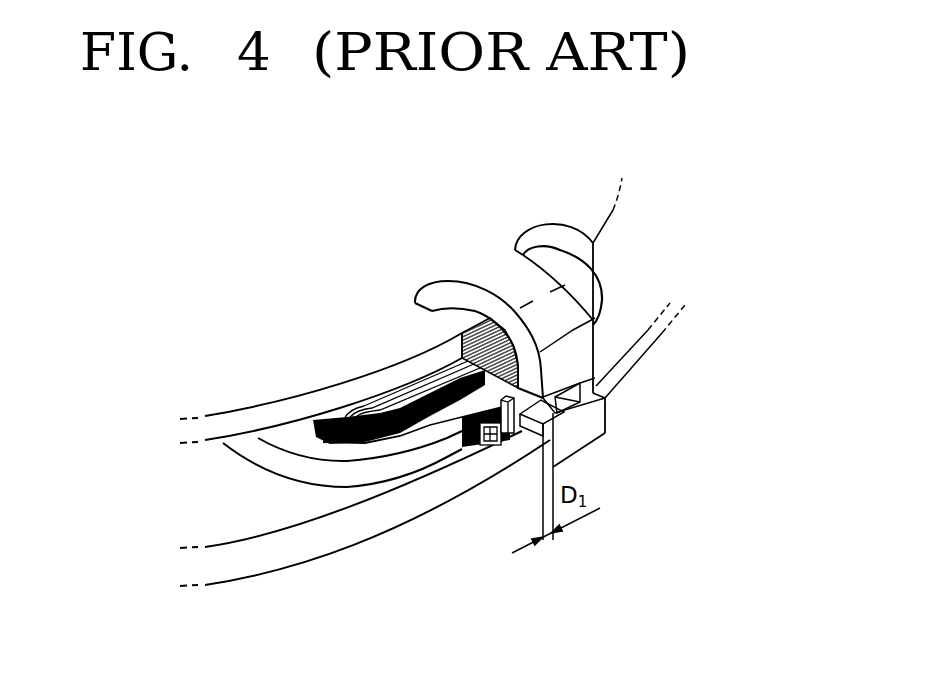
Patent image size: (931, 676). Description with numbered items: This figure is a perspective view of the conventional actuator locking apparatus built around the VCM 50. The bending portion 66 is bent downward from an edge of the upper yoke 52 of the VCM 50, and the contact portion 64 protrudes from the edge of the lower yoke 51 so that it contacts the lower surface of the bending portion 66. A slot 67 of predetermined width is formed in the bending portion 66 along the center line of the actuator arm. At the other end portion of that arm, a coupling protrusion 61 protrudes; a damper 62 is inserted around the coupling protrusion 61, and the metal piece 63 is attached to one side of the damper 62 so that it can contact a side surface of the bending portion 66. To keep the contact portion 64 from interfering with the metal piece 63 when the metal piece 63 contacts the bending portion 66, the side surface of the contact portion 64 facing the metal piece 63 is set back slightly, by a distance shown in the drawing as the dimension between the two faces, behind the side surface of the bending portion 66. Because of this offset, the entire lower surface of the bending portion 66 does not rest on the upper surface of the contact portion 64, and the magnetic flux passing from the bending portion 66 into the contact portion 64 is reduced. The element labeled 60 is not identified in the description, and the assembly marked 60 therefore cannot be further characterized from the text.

The VCM 50 is at (292, 344).
The lower yoke 51 is at (645, 350).
The upper yoke 52 is at (600, 240).
The holder block 60 is at (590, 468).
The coupling protrusion 61 is at (485, 445).
The damper 62 is at (462, 448).
The metal piece 63 is at (530, 432).
The contact portion 64 is at (590, 437).
The bending portion 66 is at (573, 345).
The slot 67 is at (607, 408).